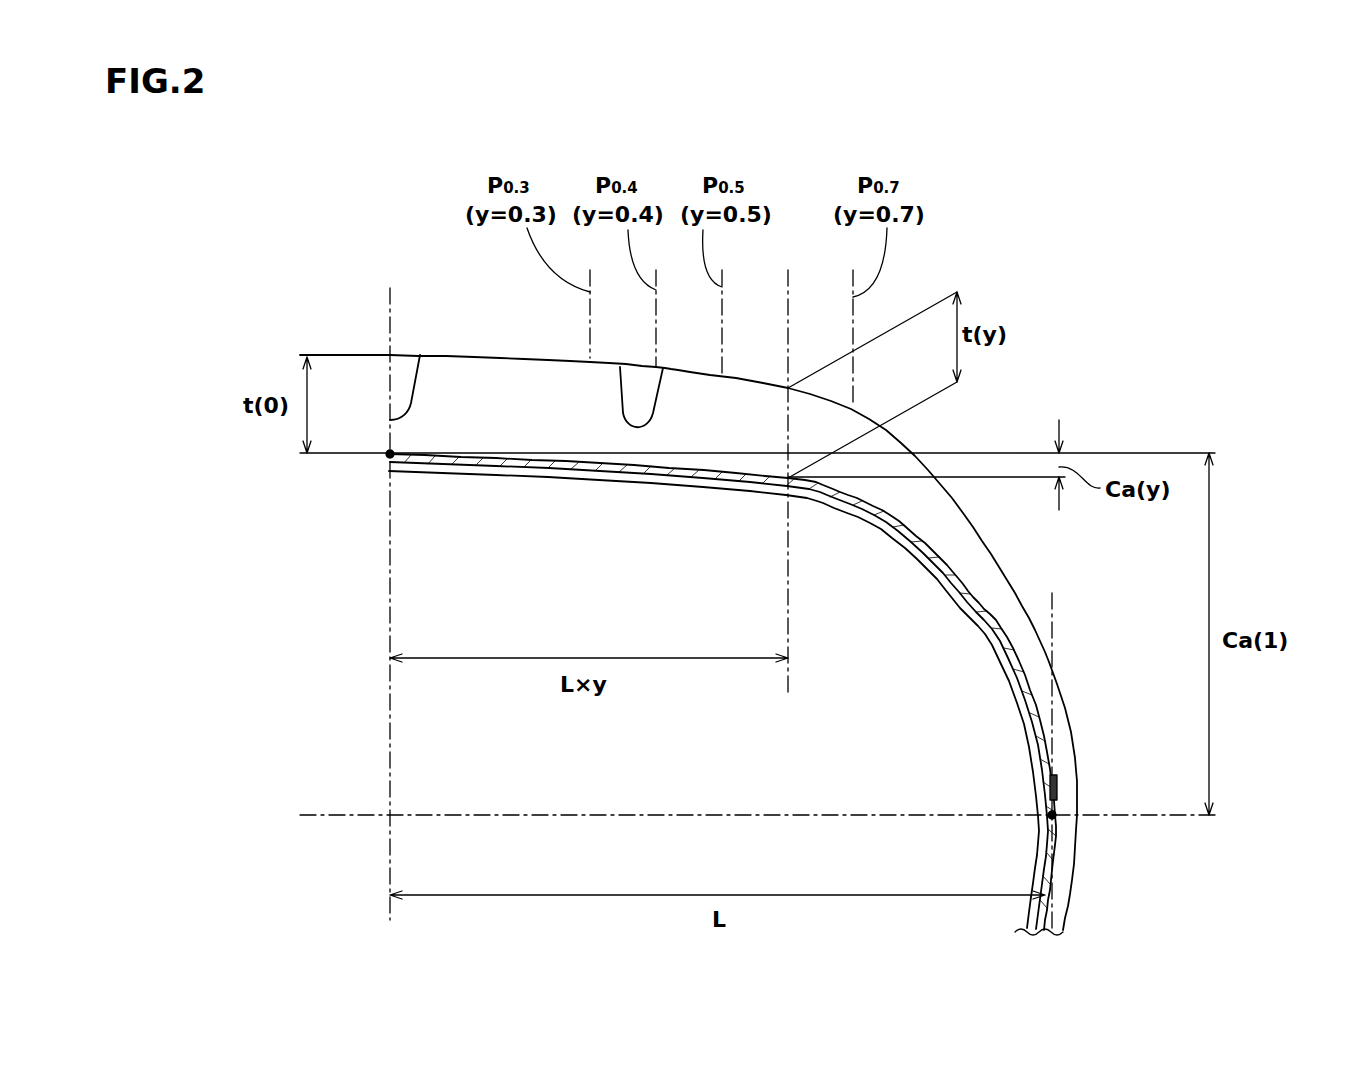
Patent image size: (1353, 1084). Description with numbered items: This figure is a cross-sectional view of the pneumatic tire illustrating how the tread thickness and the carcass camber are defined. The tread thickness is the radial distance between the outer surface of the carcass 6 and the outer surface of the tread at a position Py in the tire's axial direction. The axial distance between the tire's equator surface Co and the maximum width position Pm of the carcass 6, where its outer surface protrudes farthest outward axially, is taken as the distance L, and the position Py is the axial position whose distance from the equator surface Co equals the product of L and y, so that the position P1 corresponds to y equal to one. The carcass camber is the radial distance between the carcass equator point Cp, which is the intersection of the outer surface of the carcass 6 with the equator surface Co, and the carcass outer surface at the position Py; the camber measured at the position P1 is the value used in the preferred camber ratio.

The carcass 6 is at (965, 598).
The tire's equator surface Co is at (393, 589).
The position Py in the tire's axial direction Py is at (792, 469).
The tire's axial direction position P1 is at (1057, 735).
The carcass equator point Cp is at (374, 465).
The maximum width position of the carcass Pm is at (1054, 816).